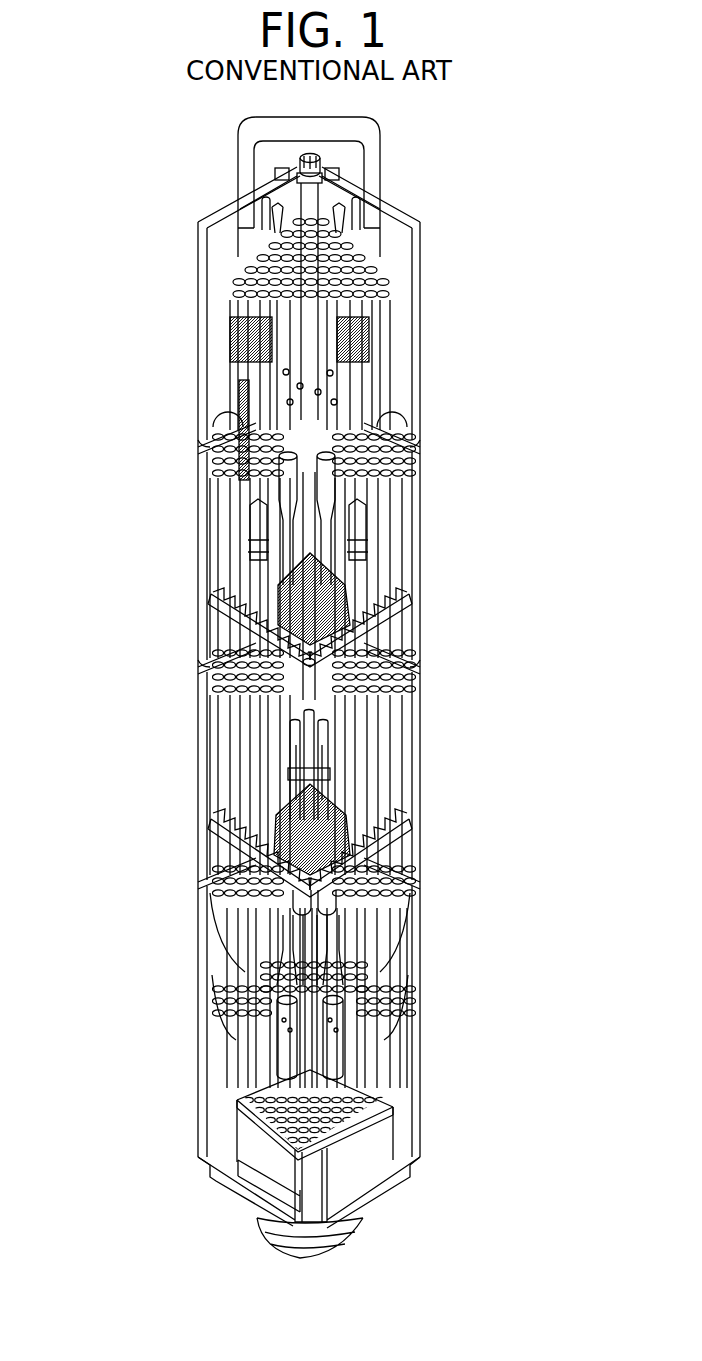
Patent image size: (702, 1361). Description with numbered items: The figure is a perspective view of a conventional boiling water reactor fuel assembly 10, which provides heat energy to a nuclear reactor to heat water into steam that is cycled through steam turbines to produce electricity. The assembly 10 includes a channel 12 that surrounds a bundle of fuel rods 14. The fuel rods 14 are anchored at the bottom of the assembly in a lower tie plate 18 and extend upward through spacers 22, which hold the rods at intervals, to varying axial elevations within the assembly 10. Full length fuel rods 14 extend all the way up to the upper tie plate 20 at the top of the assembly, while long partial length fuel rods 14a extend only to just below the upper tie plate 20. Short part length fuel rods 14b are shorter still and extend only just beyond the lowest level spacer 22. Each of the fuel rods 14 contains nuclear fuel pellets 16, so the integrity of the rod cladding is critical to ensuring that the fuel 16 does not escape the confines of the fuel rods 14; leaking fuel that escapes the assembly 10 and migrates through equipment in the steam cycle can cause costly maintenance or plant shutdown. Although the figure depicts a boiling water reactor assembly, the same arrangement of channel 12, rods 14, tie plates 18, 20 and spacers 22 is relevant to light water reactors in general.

The fuel assembly 10 is at (458, 258).
The channel 12 is at (420, 912).
The fuel rods 14 is at (385, 496).
The long partial length fuel rods 14a is at (367, 572).
The short part length fuel rods 14b is at (290, 782).
The nuclear fuel pellets 16 is at (372, 1040).
The lower tie plate 18 is at (255, 1135).
The upper tie plate 20 is at (250, 303).
The spacers 22 is at (262, 617).